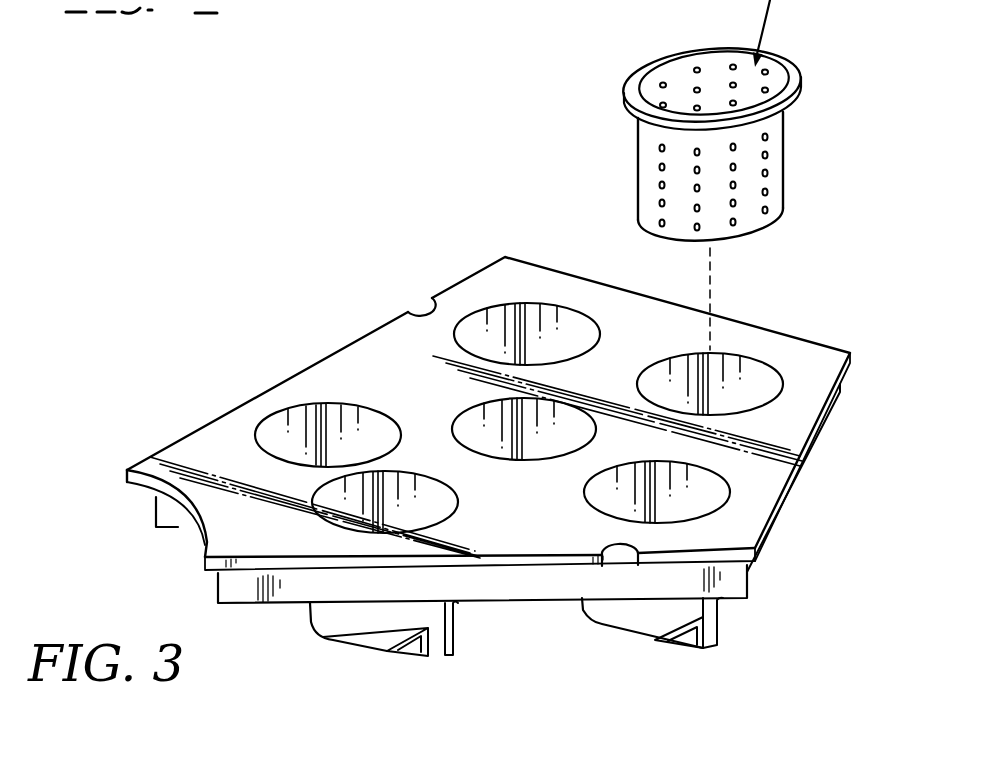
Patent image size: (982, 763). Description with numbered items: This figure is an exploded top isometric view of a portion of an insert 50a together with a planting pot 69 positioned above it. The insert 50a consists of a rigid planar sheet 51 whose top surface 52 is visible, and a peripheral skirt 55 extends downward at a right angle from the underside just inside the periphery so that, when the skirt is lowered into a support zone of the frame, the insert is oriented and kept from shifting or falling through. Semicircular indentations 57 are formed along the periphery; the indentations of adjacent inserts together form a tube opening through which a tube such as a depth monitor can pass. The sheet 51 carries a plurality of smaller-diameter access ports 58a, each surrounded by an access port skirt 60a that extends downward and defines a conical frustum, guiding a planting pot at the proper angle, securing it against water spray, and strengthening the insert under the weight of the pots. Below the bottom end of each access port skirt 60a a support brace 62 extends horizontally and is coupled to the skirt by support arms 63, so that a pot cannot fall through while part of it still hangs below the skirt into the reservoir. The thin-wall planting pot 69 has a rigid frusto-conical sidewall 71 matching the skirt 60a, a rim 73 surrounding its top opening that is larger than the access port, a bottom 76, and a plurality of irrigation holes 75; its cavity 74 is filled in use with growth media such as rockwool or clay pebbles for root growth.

The insert 50a is at (298, 255).
The rigid planar sheet 51 is at (210, 440).
The top surface 52 is at (418, 378).
The peripheral skirt 55 is at (175, 520).
The semicircular indentation 57 is at (408, 308).
The access port 58a is at (505, 302).
The access port skirt 60a is at (578, 328).
The support brace 62 is at (400, 647).
The support arm 63 is at (440, 653).
The planting pot 69 is at (630, 145).
The rigid sidewall 71 is at (780, 138).
The rim 73 is at (800, 98).
The cavity 74 is at (680, 80).
The irrigation holes 75 is at (736, 187).
The bottom 76 is at (745, 232).